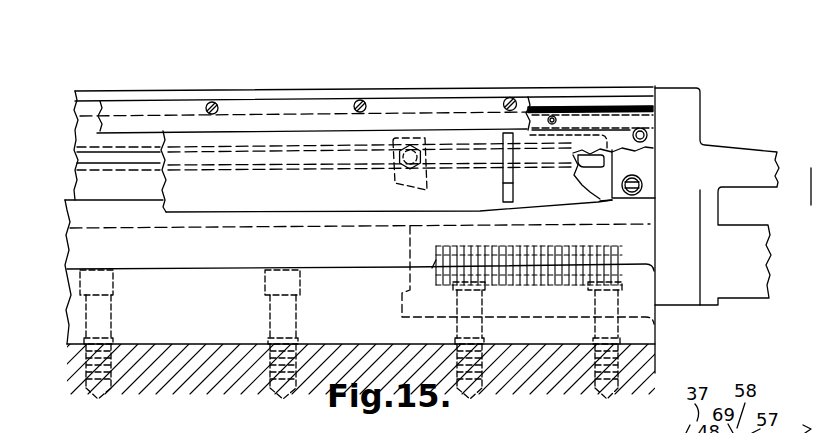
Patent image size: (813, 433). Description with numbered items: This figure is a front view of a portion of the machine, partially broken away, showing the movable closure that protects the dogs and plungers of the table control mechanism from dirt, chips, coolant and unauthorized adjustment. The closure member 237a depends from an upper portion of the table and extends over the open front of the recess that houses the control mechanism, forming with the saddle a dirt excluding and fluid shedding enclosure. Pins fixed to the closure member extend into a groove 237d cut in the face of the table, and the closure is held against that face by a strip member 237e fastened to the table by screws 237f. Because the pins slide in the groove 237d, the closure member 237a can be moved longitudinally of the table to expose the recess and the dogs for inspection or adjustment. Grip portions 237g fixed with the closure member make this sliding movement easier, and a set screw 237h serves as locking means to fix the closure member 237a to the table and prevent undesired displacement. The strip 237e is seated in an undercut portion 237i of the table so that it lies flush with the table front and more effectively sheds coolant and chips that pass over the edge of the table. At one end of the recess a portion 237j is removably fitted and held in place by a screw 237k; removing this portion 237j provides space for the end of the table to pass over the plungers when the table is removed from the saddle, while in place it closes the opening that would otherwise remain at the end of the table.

The closure member 237a is at (232, 203).
The groove 237d is at (623, 108).
The strip member 237e is at (470, 107).
The screws 237f is at (533, 78).
The grip portions 237g is at (503, 183).
The set screw 237h is at (649, 130).
The undercut portion 237i is at (607, 78).
The removable portion 237j is at (617, 187).
The screw 237k is at (636, 178).